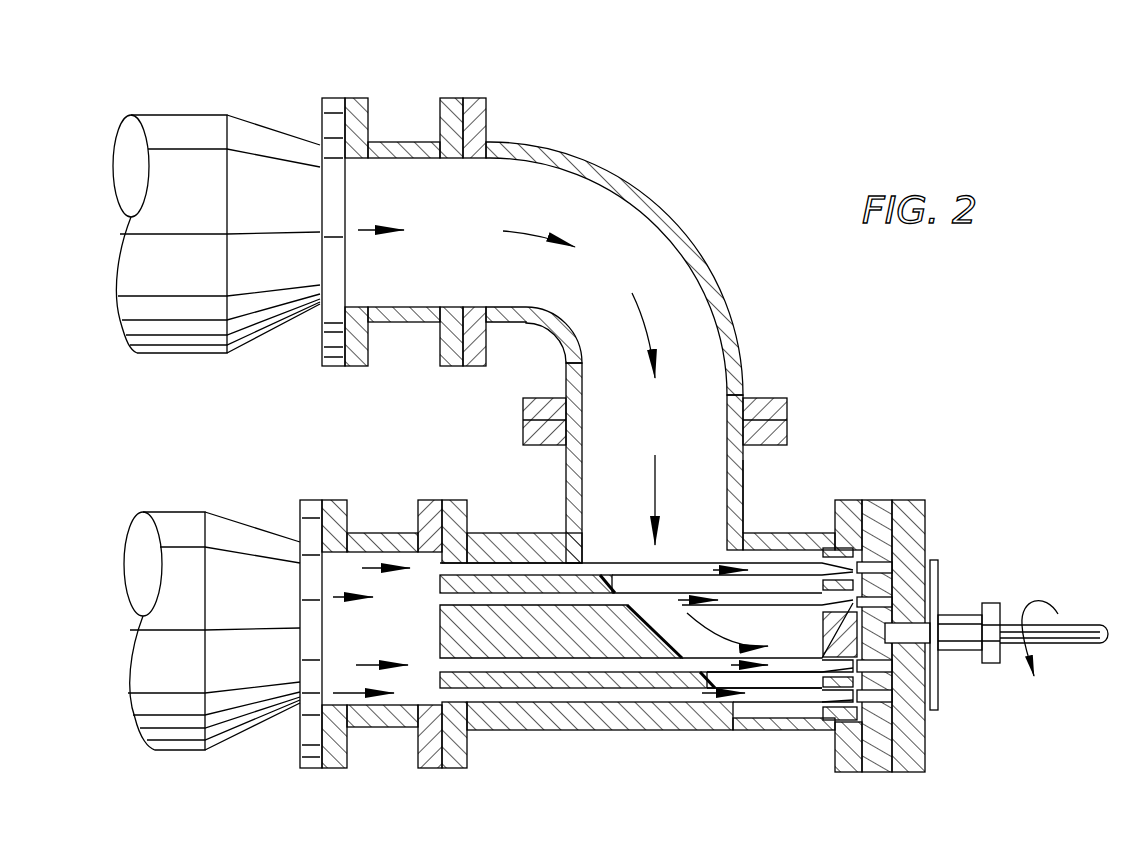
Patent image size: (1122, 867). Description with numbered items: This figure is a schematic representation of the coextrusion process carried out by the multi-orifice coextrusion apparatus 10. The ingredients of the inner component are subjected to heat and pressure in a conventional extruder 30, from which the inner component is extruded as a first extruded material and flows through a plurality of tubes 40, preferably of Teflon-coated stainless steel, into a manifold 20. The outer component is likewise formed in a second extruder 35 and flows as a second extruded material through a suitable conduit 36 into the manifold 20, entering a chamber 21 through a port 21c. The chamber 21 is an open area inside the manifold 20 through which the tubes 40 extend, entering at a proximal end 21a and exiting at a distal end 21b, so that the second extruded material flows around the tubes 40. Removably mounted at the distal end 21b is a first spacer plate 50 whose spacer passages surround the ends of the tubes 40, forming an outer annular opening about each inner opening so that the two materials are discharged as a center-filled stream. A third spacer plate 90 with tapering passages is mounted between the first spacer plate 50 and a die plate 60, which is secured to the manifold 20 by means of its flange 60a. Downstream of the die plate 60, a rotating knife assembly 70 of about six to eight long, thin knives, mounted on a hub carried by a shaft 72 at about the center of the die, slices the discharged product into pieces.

The multi-orifice coextrusion apparatus 10 is at (550, 738).
The manifold 20 is at (644, 730).
The chamber 21 is at (784, 633).
The proximal end 21a is at (658, 637).
The distal end 21b is at (818, 630).
The port 21c is at (745, 499).
The extruder 30 is at (186, 520).
The extruder 35 is at (207, 348).
The conduit 36 is at (691, 224).
The tubes 40 is at (648, 600).
The first spacer plate 50 is at (823, 626).
The die plate 60 is at (932, 527).
The flange 60a is at (932, 500).
The rotating knife assembly 70 is at (960, 652).
The shaft 72 is at (1084, 646).
The third spacer plate 90 is at (877, 500).